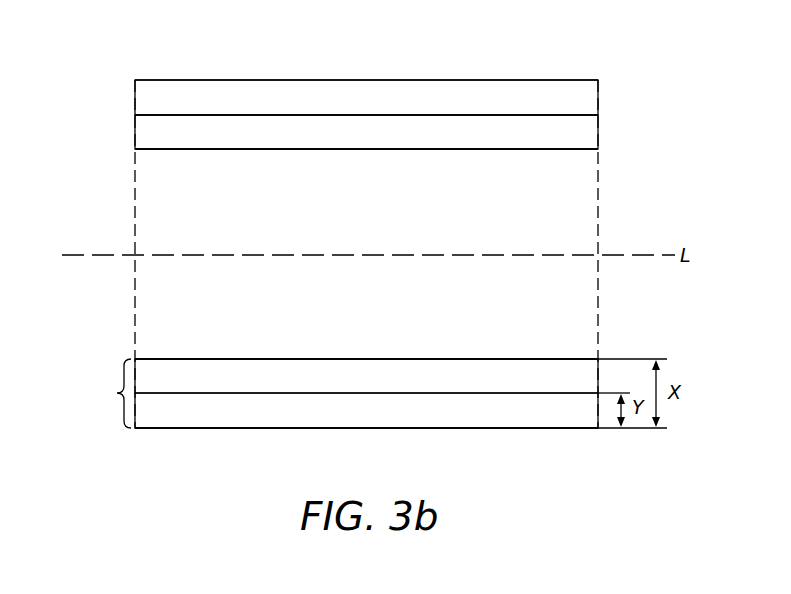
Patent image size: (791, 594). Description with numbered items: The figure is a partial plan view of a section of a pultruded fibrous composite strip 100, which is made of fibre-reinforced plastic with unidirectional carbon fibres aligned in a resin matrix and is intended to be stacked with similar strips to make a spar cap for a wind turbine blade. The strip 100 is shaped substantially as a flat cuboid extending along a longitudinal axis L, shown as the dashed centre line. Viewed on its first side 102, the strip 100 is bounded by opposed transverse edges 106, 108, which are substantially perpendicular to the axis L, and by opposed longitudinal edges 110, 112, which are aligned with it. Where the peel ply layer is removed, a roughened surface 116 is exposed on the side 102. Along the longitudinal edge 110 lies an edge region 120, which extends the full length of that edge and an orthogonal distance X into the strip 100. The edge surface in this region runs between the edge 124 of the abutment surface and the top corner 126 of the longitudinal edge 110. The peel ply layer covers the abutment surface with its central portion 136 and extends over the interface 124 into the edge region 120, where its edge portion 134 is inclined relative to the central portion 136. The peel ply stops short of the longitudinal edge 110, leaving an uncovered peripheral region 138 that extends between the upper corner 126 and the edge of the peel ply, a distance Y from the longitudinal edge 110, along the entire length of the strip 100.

The pultruded fibrous composite strip 100 is at (99, 88).
The first side 102 is at (570, 307).
The transverse edge 106 is at (600, 197).
The transverse edge 108 is at (134, 206).
The longitudinal edge 110 is at (365, 428).
The longitudinal edge 112 is at (365, 80).
The roughened surface 116 is at (589, 135).
The edge region 120 is at (104, 393).
The edge of the abutment surface 124 is at (196, 359).
The top corner of the longitudinal edge 126 is at (195, 428).
The edge portion of the peel ply layer 134 is at (352, 143).
The central portion of the peel ply layer 136 is at (352, 293).
The peripheral region 138 is at (352, 107).